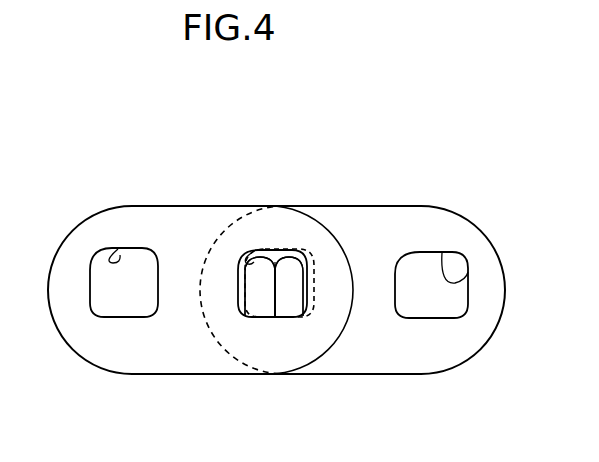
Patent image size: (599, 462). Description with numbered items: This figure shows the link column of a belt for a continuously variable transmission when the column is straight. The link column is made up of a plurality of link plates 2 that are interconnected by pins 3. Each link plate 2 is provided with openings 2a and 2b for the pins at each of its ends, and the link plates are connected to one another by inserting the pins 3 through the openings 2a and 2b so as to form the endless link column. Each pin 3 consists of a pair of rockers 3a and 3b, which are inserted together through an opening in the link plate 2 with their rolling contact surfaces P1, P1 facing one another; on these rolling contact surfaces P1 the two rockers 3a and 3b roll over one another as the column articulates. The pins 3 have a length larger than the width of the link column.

The link plate 2 is at (175, 362).
The opening 2a is at (253, 252).
The opening 2b is at (118, 249).
The pin 3 is at (363, 108).
The rocker 3a is at (292, 272).
The rocker 3b is at (267, 270).
The rolling contact surface P1 is at (276, 293).